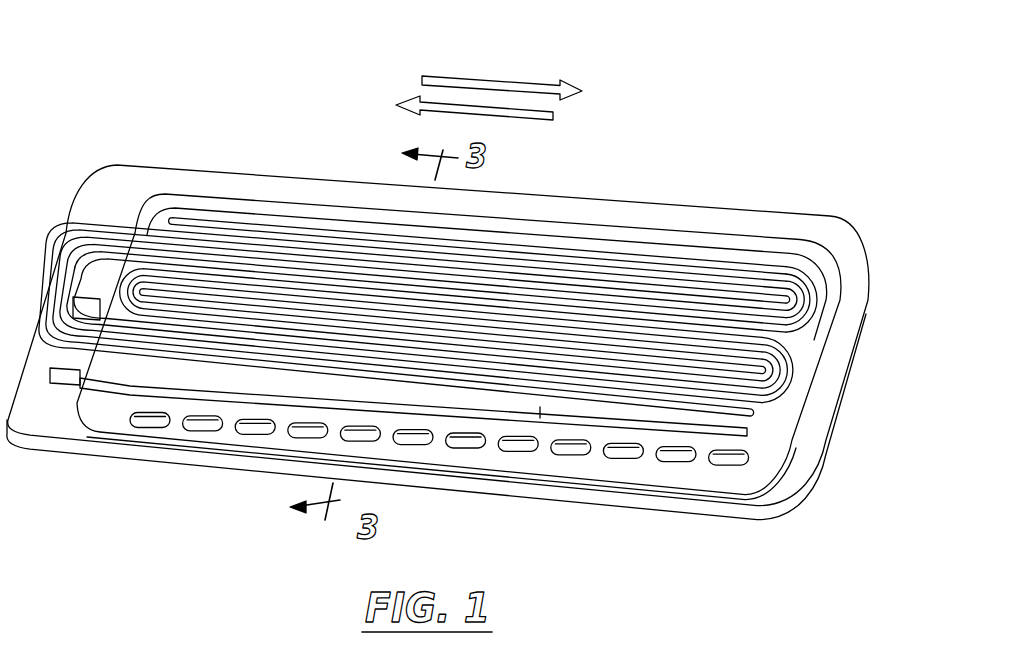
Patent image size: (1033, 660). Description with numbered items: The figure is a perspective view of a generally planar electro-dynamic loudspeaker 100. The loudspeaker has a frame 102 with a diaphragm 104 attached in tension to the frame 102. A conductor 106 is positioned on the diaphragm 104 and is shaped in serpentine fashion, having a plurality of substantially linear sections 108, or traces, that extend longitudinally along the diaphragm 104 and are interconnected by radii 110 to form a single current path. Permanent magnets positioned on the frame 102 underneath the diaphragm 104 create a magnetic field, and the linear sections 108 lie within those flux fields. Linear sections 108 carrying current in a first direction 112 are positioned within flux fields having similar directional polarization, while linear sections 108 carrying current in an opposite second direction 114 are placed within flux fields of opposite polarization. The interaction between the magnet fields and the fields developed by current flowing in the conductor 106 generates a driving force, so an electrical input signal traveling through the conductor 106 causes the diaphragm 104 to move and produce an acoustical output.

The electro-dynamic loudspeaker 100 is at (465, 286).
The frame 102 is at (77, 458).
The diaphragm 104 is at (150, 165).
The conductor 106 is at (768, 284).
The linear sections 108 is at (513, 377).
The radii 110 is at (813, 310).
The first direction 112 is at (513, 83).
The second direction 114 is at (545, 117).